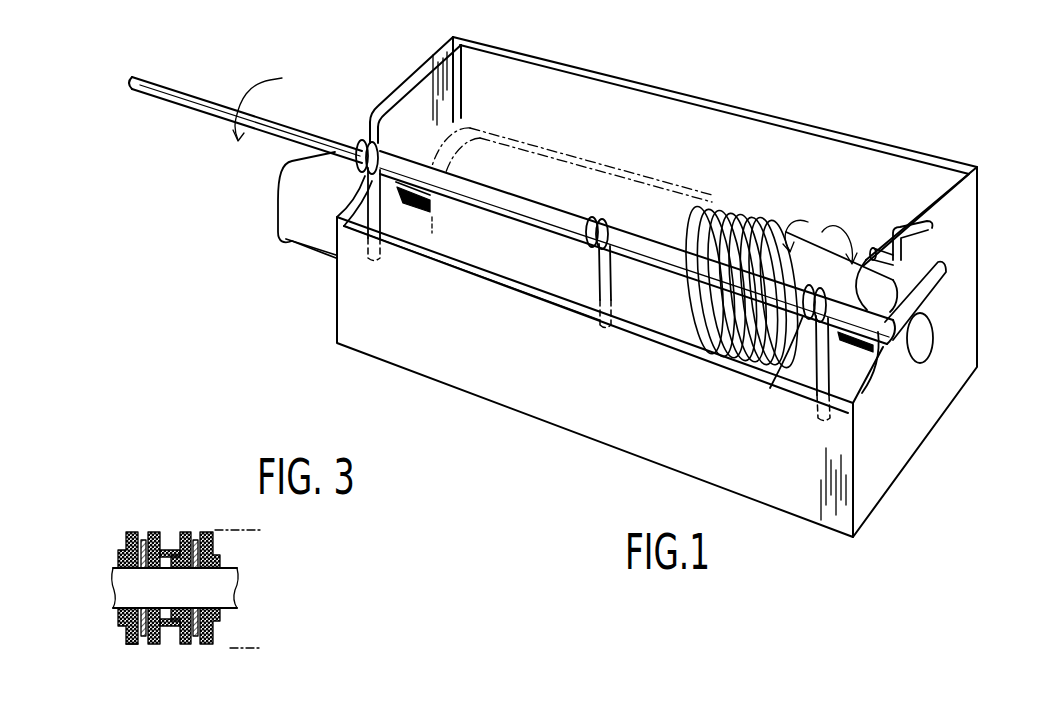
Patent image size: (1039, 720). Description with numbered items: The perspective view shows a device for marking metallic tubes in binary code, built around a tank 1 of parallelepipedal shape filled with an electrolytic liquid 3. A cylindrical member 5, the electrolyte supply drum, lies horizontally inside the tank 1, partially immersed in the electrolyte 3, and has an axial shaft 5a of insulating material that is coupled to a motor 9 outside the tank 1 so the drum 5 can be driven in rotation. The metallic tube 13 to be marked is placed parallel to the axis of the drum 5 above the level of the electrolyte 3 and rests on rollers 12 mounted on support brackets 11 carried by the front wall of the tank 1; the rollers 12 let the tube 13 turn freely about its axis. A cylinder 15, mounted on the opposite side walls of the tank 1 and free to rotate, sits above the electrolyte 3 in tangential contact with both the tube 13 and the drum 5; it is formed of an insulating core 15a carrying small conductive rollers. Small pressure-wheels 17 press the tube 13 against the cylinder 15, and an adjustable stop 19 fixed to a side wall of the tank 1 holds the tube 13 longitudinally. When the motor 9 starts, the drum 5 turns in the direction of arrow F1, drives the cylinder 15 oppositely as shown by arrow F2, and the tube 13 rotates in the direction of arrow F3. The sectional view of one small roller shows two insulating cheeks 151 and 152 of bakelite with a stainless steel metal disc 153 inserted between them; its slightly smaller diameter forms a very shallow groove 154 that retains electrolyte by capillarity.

In FIG. 1, the tank 1 is at (336, 318).
In FIG. 1, the electrolytic liquid 3 is at (428, 213).
In FIG. 1, the cylindrical member 5 is at (768, 214).
In FIG. 1, the axial shaft 5a is at (423, 207).
In FIG. 1, the motor 9 is at (293, 203).
In FIG. 1, the support brackets 11 is at (366, 250).
In FIG. 1, the rollers 12 is at (420, 196).
In FIG. 1, the metallic tube 13 is at (195, 112).
In FIG. 1, the cylinder 15 is at (708, 206).
In FIG. 1, the core 15a is at (853, 273).
In FIG. 3, the core 15a is at (228, 573).
In FIG. 1, the small pressure-wheels 17 is at (362, 142).
In FIG. 1, the adjustable stop 19 is at (927, 290).
In FIG. 3, the cheek 151 is at (162, 533).
In FIG. 3, the cheek 152 is at (147, 545).
In FIG. 3, the metal disc 153 is at (145, 540).
In FIG. 3, the groove 154 is at (146, 648).
In FIG. 1, the arrow F1 is at (853, 273).
In FIG. 1, the arrow F2 is at (808, 222).
In FIG. 1, the arrow F3 is at (264, 103).